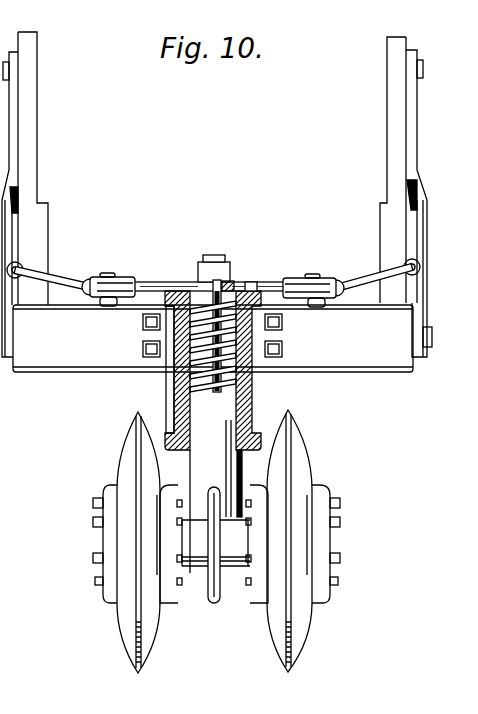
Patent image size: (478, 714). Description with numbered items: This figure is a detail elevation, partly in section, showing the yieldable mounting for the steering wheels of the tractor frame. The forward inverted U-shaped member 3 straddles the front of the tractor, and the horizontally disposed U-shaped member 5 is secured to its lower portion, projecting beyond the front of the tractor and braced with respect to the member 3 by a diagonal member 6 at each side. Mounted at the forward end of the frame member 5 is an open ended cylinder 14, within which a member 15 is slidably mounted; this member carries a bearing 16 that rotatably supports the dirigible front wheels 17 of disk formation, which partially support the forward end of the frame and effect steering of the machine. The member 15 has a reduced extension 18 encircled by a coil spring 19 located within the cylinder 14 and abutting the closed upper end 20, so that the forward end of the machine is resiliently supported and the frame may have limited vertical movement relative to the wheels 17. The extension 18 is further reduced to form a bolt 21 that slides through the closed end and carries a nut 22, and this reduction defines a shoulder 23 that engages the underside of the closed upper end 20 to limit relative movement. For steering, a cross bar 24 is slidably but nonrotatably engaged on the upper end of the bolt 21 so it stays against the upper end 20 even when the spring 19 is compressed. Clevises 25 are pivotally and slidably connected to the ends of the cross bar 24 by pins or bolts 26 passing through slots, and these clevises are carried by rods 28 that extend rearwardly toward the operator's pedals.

The forward inverted U-shaped member 3 is at (398, 143).
The horizontally disposed U-shaped member 5 is at (213, 338).
The diagonal member 6 is at (420, 237).
The open ended cylinder 14 is at (175, 383).
The slidable member 15 is at (200, 458).
The bearing 16 is at (230, 570).
The dirigible front wheels 17 is at (122, 465).
The reduced extension 18 is at (262, 388).
The coil spring 19 is at (252, 285).
The closed upper end 20 is at (238, 284).
The bolt 21 is at (219, 256).
The nut 22 is at (203, 270).
The shoulder 23 is at (183, 295).
The cross bar 24 is at (285, 281).
The clevises 25 is at (121, 277).
The pins or bolts 26 is at (102, 274).
The rods 28 is at (57, 277).